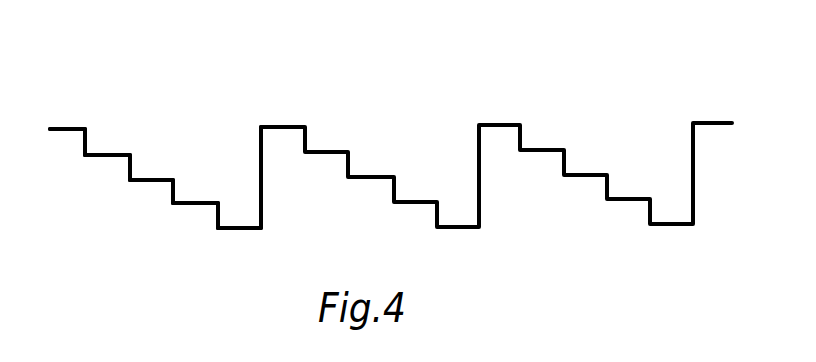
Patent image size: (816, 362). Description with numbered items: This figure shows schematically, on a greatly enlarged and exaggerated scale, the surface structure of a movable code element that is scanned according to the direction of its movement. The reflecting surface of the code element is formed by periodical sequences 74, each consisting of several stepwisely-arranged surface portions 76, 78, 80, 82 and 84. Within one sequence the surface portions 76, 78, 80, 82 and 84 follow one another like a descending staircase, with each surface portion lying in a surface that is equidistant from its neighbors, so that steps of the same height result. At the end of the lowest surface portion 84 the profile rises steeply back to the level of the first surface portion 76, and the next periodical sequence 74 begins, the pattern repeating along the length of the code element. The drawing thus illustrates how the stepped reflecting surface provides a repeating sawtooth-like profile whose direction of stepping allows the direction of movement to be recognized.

The periodical sequences 74 is at (145, 143).
The surface portion 76 is at (72, 127).
The surface portion 78 is at (108, 152).
The surface portion 80 is at (155, 177).
The surface portion 82 is at (203, 200).
The surface portion 84 is at (243, 228).